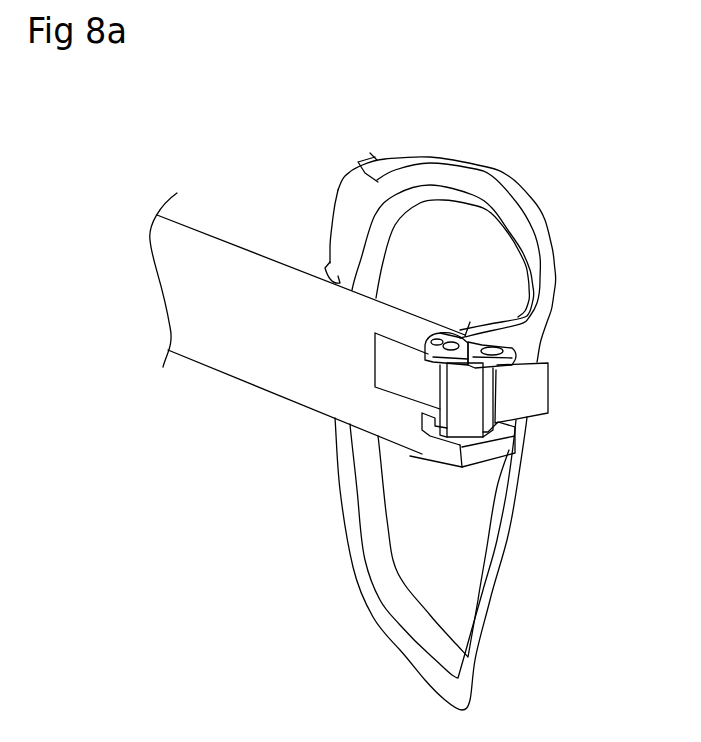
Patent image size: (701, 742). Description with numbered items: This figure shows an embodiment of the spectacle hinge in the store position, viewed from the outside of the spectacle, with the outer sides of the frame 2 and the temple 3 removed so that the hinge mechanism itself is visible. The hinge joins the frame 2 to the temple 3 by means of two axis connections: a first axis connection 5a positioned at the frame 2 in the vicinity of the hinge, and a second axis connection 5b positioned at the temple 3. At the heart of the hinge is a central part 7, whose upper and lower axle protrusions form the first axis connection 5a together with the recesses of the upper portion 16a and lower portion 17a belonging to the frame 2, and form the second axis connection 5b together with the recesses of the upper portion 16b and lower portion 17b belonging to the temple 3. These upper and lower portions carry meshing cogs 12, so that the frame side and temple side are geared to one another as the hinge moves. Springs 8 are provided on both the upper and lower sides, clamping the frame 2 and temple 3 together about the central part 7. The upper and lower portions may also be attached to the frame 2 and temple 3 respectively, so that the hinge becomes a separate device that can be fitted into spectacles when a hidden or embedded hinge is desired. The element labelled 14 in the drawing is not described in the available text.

The frame 2 is at (543, 267).
The temple 3 is at (255, 330).
The first axis connection 5a is at (482, 310).
The second axis connection 5b is at (448, 345).
The central part 7 is at (463, 403).
The springs 8 is at (440, 345).
The meshing cogs 12 is at (452, 318).
The mounting block 14 is at (517, 393).
The upper portion of the frame 16a is at (512, 360).
The upper portion of the temple 16b is at (420, 343).
The lower portion of the frame 17a is at (500, 453).
The lower portion of the temple 17b is at (422, 445).